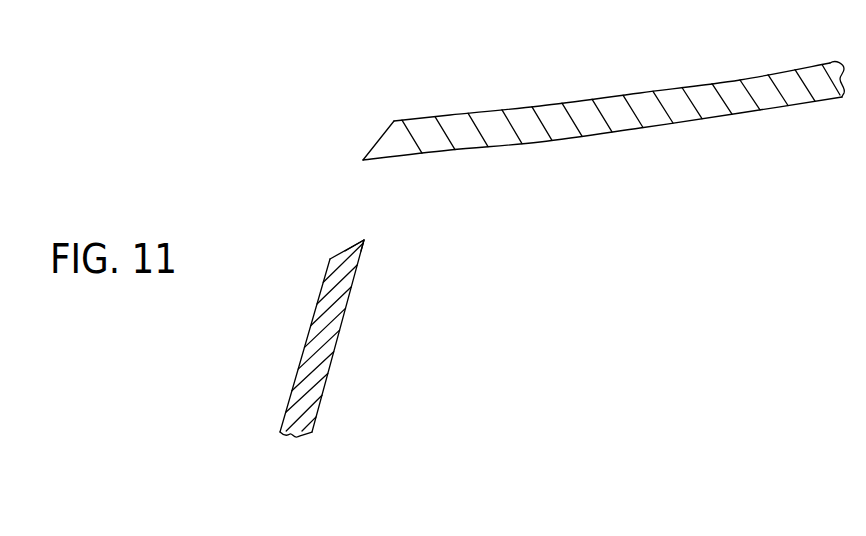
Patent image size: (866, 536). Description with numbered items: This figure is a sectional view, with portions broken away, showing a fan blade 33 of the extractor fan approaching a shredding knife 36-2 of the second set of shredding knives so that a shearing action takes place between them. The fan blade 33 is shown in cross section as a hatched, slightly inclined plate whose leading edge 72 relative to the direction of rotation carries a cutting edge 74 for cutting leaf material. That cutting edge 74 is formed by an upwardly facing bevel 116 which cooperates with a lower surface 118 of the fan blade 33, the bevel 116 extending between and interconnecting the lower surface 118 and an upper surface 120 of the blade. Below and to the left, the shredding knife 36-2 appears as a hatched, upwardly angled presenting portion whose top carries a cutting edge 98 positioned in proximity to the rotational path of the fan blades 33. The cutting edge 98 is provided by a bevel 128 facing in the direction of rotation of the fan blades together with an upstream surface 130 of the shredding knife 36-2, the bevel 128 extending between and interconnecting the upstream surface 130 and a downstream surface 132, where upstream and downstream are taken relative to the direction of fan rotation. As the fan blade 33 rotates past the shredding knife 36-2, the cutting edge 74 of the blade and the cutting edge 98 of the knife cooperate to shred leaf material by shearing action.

The fan blade 33 is at (573, 124).
The shredding knife 36-2 is at (289, 296).
The leading edge 72 is at (420, 174).
The cutting edge 74 is at (363, 160).
The cutting edge 98 is at (364, 240).
The bevel 116 is at (382, 137).
The lower surface 118 is at (592, 137).
The upper surface 120 is at (573, 121).
The bevel 128 is at (345, 251).
The upstream surface 130 is at (335, 352).
The downstream surface 132 is at (302, 355).